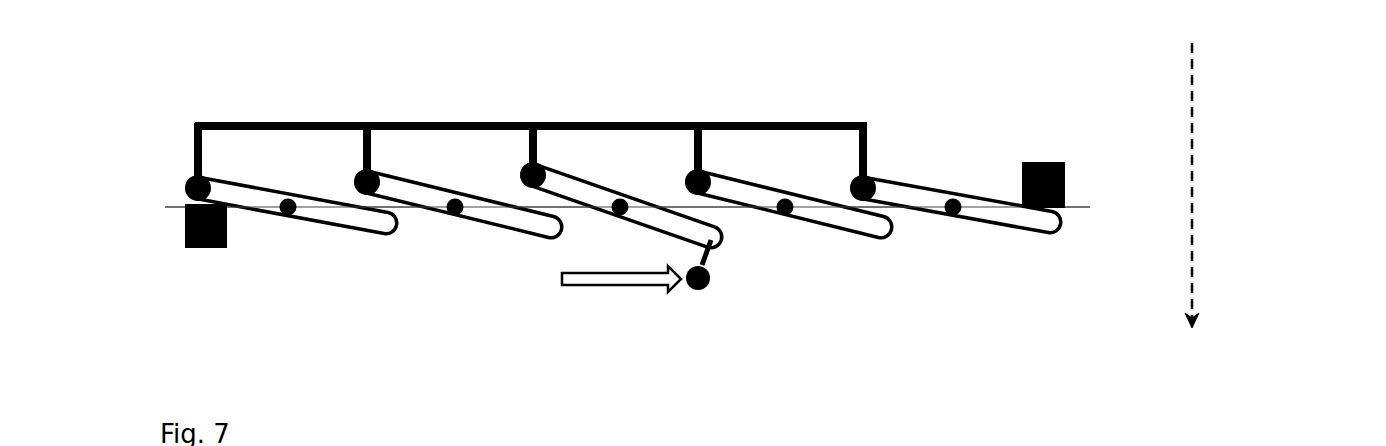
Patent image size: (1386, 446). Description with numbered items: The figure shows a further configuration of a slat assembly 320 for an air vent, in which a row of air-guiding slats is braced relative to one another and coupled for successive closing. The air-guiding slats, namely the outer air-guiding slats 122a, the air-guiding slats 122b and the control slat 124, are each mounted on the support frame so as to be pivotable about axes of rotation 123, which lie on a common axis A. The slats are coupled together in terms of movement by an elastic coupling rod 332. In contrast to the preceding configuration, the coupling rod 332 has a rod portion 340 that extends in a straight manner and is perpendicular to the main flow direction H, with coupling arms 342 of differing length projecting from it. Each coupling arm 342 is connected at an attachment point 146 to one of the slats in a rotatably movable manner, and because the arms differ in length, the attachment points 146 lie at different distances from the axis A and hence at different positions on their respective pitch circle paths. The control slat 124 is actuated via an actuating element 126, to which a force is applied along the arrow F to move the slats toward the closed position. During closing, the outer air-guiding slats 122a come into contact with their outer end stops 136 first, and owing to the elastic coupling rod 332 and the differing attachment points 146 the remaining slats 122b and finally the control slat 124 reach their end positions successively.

The slat assembly 320 is at (945, 97).
The coupling rod 332 is at (477, 123).
The rod portion 340 is at (418, 123).
The coupling arms 342 is at (193, 143).
The attachment points 146 is at (187, 182).
The control slat 124 is at (578, 190).
The outer air-guiding slats 122a is at (333, 217).
The air-guiding slats 122b is at (510, 215).
The axes of rotation 123 is at (287, 212).
The outer end stops 136 is at (187, 250).
The actuating element 126 is at (690, 290).